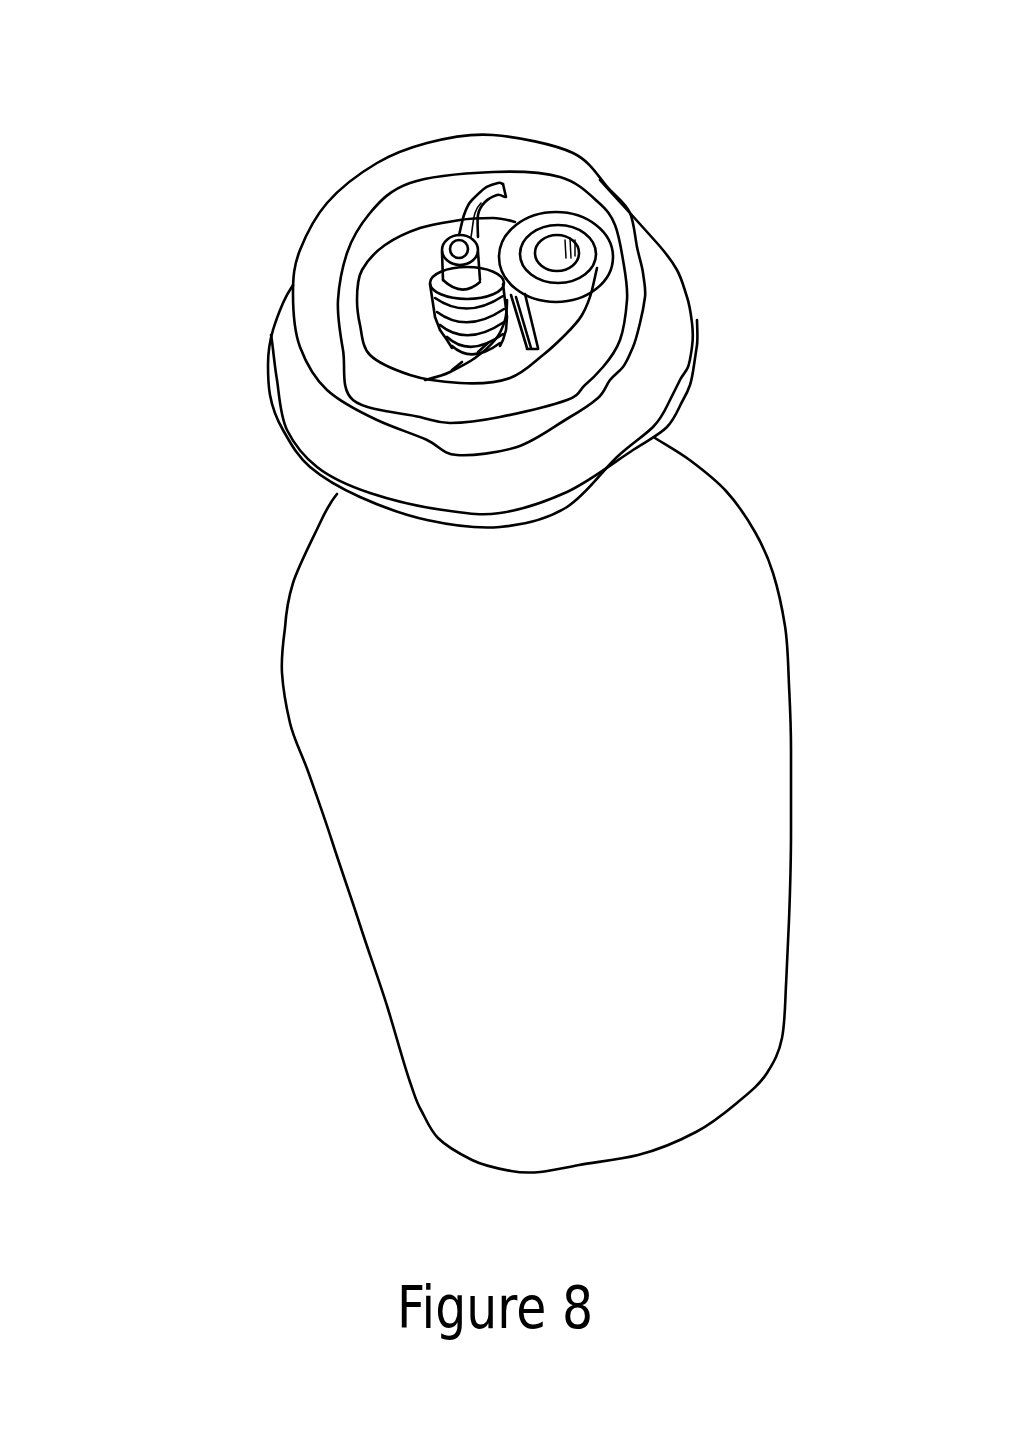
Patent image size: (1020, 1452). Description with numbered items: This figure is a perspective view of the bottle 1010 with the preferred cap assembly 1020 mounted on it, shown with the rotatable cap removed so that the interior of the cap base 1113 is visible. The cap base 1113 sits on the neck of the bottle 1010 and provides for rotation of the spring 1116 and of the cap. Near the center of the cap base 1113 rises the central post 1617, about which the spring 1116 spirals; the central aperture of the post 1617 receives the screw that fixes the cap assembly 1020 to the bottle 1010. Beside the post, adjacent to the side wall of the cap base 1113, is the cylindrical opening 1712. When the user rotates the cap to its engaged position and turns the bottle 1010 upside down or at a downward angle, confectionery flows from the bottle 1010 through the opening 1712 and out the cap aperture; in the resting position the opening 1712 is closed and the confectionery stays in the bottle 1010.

The bottle 1010 is at (288, 845).
The cap assembly 1020 is at (233, 145).
The cap base 1113 is at (550, 162).
The spring 1116 is at (437, 315).
The central post 1617 is at (452, 236).
The opening 1712 is at (556, 254).